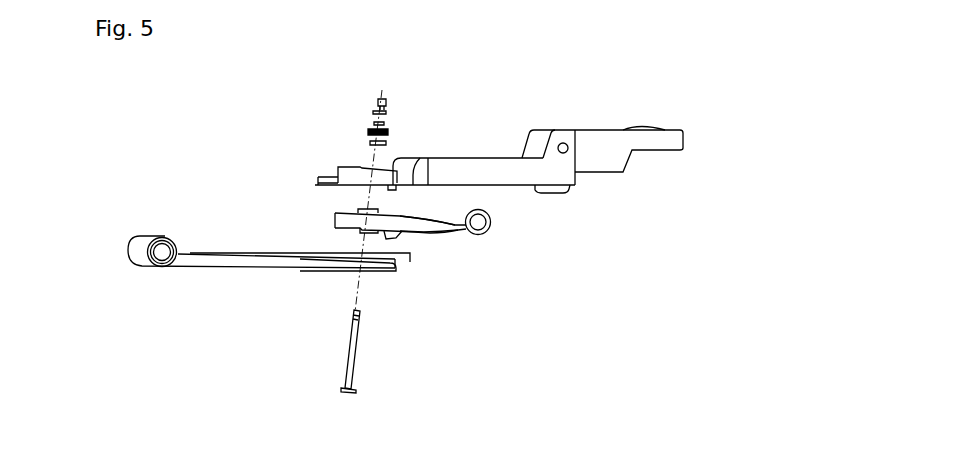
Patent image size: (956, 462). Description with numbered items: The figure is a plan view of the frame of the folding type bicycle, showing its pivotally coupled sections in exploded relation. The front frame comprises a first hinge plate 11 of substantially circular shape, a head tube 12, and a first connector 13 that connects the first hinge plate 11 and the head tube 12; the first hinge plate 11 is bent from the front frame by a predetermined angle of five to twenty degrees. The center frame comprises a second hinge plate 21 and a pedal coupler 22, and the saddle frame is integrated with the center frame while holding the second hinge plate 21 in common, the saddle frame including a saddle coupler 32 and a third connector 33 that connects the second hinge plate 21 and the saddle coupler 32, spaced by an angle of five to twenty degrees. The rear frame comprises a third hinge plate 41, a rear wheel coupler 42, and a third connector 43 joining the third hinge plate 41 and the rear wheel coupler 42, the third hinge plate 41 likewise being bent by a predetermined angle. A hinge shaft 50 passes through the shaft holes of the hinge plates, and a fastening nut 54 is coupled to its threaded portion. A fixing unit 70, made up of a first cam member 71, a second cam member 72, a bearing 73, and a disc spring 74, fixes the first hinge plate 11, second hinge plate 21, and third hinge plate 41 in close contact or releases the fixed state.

The first hinge plate 11 is at (387, 268).
The head tube 12 is at (142, 266).
The first connector 13 is at (237, 262).
The second hinge plate 21 is at (335, 215).
The pedal coupler 22 is at (357, 233).
The saddle coupler 32 is at (476, 236).
The third connector 33 is at (437, 230).
The third hinge plate 41 is at (340, 168).
The rear wheel coupler 42 is at (673, 140).
The third connector 43 is at (473, 158).
The hinge shaft 50 is at (352, 355).
The fastening nut 54 is at (383, 98).
The fixing unit 70 is at (318, 100).
The first cam member 71 is at (369, 143).
The second cam member 72 is at (367, 132).
The bearing 73 is at (372, 123).
The disc spring 74 is at (372, 112).